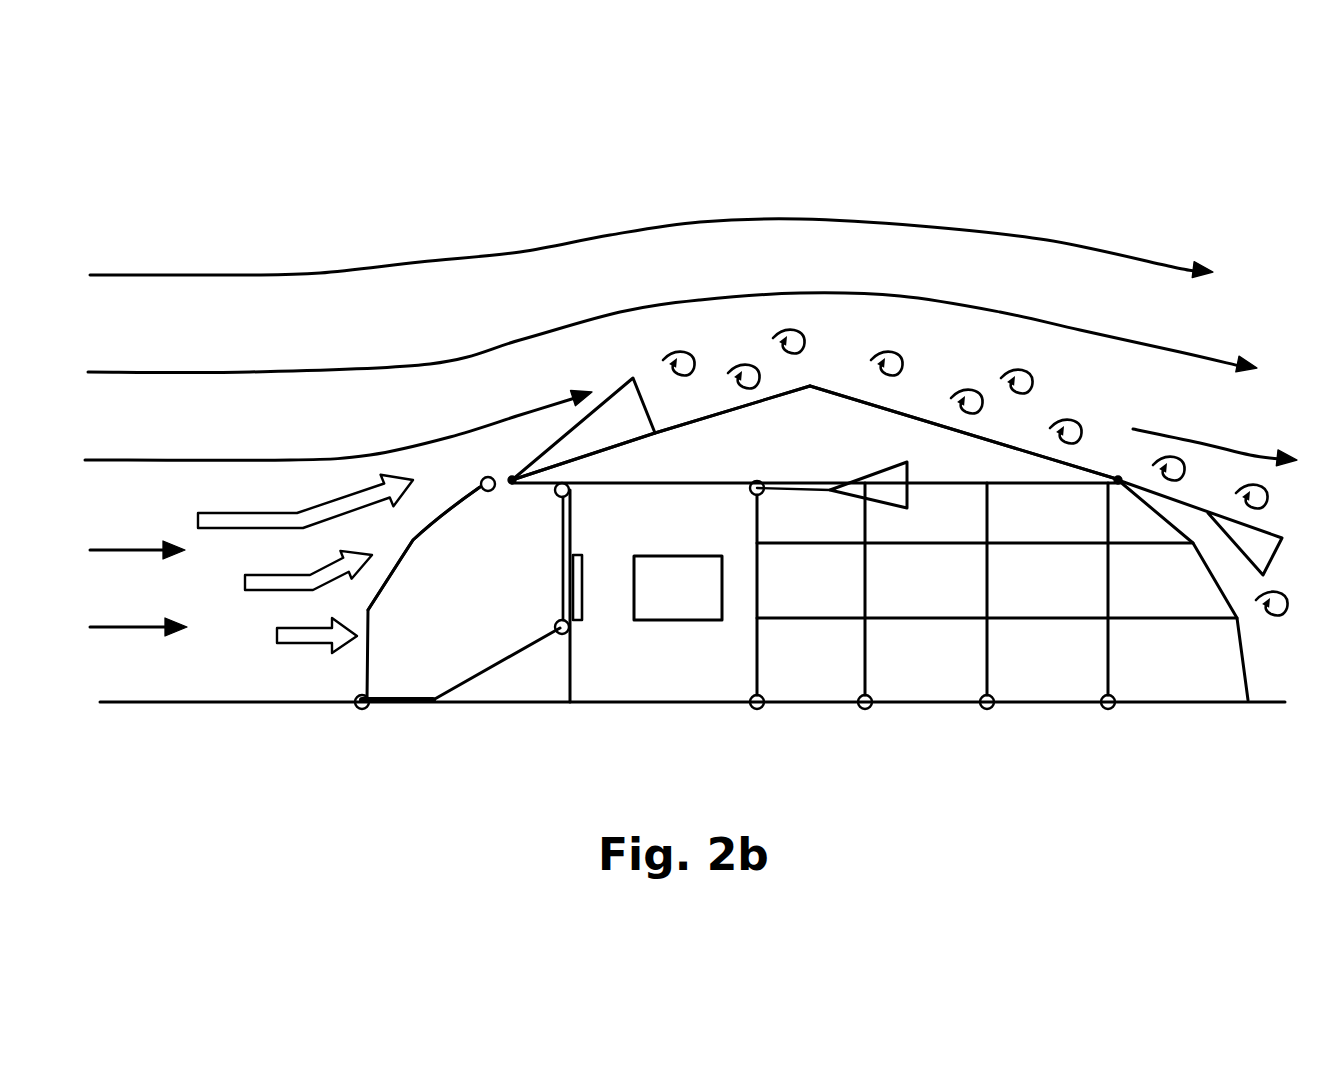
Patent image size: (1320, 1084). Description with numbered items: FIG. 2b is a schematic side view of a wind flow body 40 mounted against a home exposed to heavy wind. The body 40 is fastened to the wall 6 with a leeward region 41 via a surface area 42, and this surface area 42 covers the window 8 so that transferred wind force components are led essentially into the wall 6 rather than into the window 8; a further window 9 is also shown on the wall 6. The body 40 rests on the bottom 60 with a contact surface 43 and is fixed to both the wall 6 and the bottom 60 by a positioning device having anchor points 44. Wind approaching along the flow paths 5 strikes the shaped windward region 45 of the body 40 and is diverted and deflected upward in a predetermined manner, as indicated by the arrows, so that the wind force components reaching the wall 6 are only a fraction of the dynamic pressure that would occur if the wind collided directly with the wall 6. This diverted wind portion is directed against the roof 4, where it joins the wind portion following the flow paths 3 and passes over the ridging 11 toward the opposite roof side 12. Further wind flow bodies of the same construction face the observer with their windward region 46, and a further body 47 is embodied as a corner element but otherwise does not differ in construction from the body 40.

The flow paths 3 is at (238, 460).
The roof 4 is at (783, 458).
The flow paths 5 is at (162, 628).
The wall 6 is at (571, 677).
The window 8 is at (582, 594).
The window 9 is at (672, 594).
The ridging 11 is at (816, 372).
The opposite roof side 12 is at (908, 403).
The wind flow body 40 is at (468, 630).
The leeward region 41 is at (540, 548).
The surface area 42 is at (558, 572).
The contact surface 43 is at (393, 703).
The anchor points 44 is at (561, 483).
The windward region 45 is at (400, 553).
The windward region 46 is at (1050, 682).
The further body 47 is at (1179, 672).
The bottom 60 is at (222, 703).